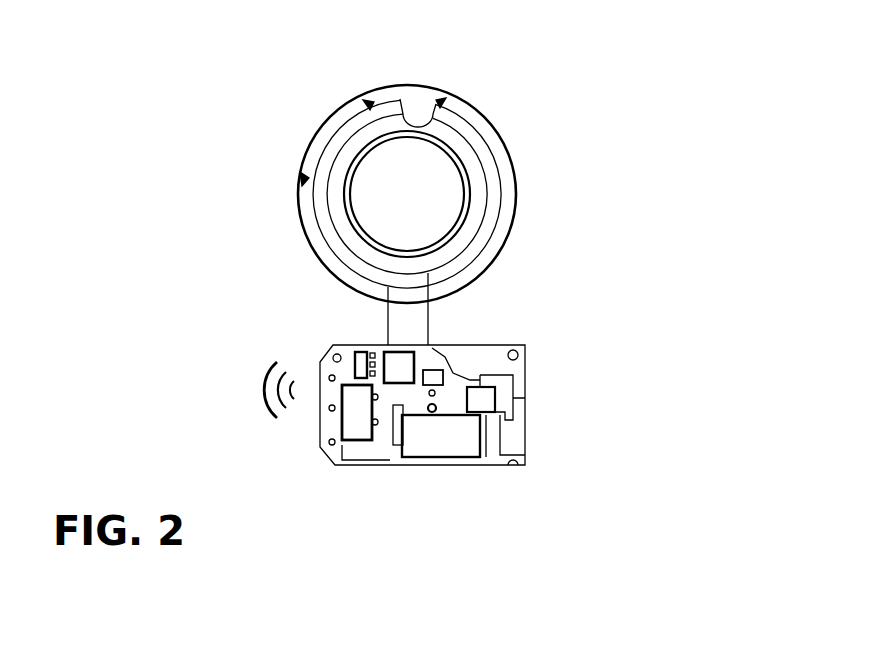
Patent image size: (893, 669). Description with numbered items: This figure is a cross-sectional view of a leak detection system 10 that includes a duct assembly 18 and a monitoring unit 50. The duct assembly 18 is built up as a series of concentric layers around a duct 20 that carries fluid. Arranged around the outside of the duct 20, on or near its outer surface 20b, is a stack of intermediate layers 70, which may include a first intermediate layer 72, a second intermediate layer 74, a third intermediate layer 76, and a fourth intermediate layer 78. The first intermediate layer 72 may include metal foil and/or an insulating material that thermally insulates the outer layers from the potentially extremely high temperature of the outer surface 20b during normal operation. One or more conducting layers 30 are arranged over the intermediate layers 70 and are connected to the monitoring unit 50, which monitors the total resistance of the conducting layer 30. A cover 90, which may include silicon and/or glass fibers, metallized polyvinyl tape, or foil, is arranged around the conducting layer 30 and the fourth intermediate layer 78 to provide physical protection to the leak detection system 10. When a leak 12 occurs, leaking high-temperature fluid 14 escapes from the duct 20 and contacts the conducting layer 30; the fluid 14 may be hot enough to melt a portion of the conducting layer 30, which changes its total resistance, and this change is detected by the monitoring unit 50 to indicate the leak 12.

The leak detection system 10 is at (620, 103).
The leak 12 is at (401, 122).
The leaking high-temperature fluid 14 is at (409, 126).
The duct assembly 18 is at (455, 65).
The duct 20 is at (394, 230).
The outer surface 20b is at (443, 246).
The conducting layer 30 is at (345, 126).
The monitoring unit 50 is at (541, 390).
The intermediate layers 70 is at (568, 263).
The first intermediate layer 72 is at (480, 241).
The second intermediate layer 74 is at (482, 216).
The third intermediate layer 76 is at (500, 182).
The fourth intermediate layer 78 is at (504, 155).
The cover 90 is at (476, 92).